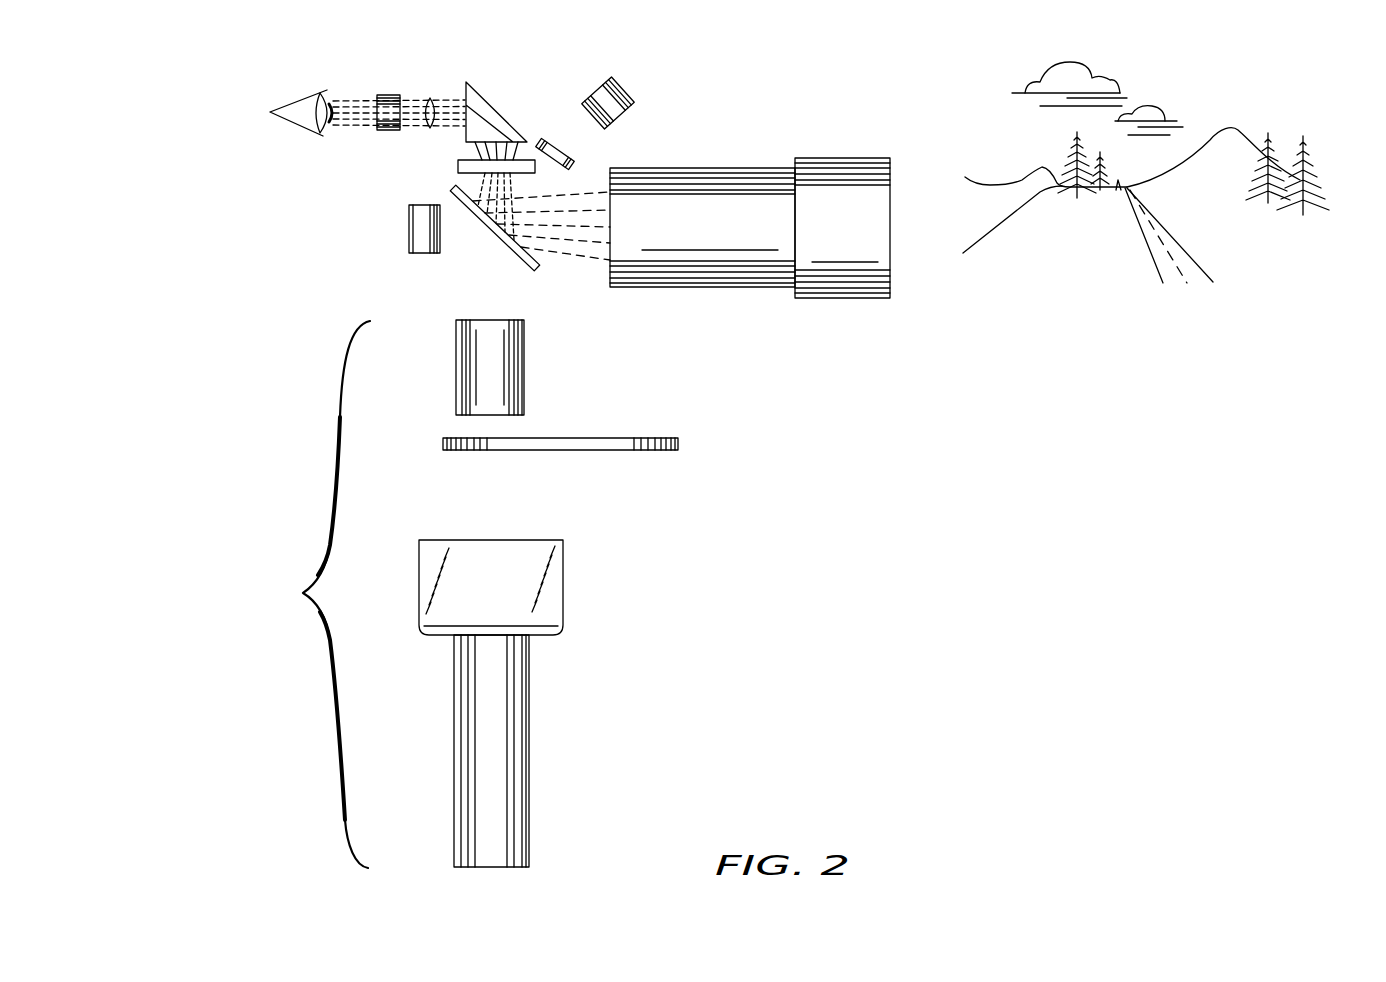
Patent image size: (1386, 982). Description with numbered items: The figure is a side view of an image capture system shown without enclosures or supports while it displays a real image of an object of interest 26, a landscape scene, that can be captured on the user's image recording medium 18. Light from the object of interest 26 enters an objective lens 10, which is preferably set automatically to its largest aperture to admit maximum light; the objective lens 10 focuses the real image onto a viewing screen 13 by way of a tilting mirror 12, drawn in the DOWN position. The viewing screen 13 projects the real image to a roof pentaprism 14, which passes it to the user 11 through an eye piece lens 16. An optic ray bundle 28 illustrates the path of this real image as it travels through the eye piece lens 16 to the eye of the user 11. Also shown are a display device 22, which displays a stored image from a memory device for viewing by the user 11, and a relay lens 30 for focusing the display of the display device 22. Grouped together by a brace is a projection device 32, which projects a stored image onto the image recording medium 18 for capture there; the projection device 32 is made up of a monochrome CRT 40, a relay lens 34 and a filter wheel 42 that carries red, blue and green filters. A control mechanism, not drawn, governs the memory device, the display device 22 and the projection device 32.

The objective lens 10 is at (710, 287).
The user 11 is at (287, 89).
The tilting mirror 12 is at (540, 270).
The viewing screen 13 is at (458, 163).
The roof pentaprism 14 is at (480, 92).
The eye piece lens 16 is at (386, 95).
The image recording medium 18 is at (413, 253).
The display device 22 is at (627, 87).
The object of interest 26 is at (1088, 292).
The optic ray bundle 28 is at (432, 99).
The relay lens 30 is at (545, 140).
The projection device 32 is at (504, 594).
The relay lens 34 is at (524, 372).
The monochrome CRT 40 is at (563, 576).
The filter wheel 42 is at (675, 437).